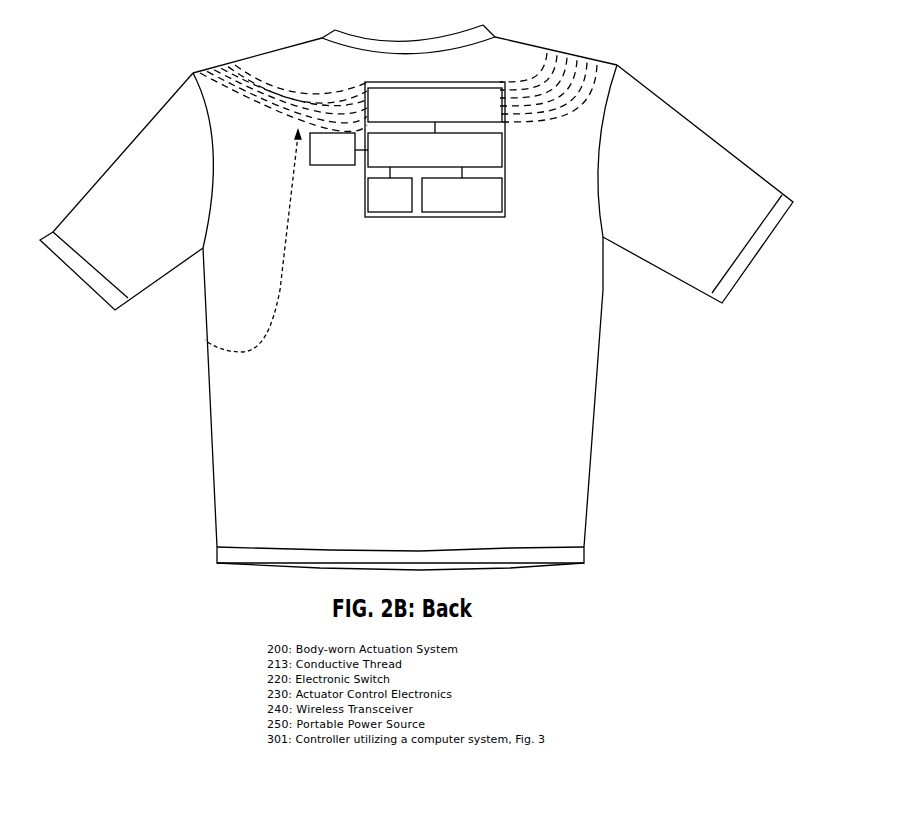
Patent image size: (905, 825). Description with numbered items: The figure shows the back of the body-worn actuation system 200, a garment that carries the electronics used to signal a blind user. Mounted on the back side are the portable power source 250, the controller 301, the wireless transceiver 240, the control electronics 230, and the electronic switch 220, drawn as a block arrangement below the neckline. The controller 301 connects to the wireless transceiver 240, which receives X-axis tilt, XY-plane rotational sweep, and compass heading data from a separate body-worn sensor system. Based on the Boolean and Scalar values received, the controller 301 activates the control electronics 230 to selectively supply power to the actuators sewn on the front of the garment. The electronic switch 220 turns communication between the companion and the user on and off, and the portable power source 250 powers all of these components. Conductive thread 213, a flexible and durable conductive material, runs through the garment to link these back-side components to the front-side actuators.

The body-worn actuation system 200 is at (697, 122).
The conductive thread 213 is at (205, 340).
The electronic switch 220 is at (390, 189).
The control electronics 230 is at (435, 105).
The wireless transceiver 240 is at (462, 189).
The portable power source 250 is at (339, 149).
The controller 301 is at (435, 144).